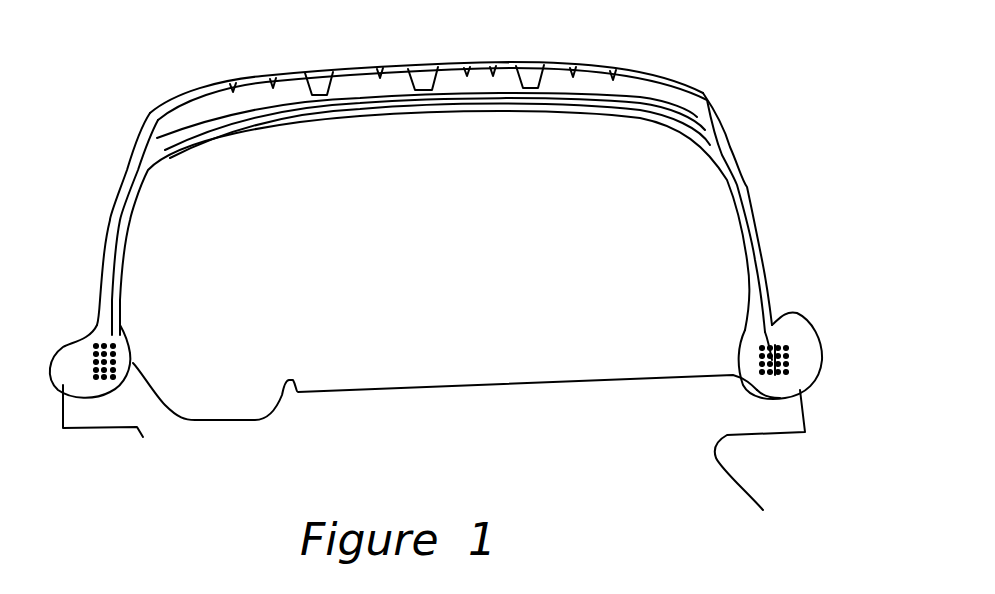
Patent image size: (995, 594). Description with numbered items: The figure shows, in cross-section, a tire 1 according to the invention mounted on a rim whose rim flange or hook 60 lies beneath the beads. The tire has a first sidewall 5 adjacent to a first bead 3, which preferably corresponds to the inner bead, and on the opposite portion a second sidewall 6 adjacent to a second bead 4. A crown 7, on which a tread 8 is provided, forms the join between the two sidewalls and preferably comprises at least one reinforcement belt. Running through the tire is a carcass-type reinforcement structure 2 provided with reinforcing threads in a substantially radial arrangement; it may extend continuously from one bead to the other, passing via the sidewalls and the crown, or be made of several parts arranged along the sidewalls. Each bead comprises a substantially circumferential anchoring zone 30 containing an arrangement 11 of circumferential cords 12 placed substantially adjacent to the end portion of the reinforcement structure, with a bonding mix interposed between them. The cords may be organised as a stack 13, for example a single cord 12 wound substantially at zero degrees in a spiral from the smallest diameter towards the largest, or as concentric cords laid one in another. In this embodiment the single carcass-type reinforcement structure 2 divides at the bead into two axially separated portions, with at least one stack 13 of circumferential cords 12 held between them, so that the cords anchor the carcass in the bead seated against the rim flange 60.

The tire 1 is at (170, 95).
The carcass-type reinforcement structure 2 is at (762, 259).
The first bead 3 is at (125, 332).
The second bead 4 is at (745, 330).
The first sidewall 5 is at (123, 240).
The second sidewall 6 is at (744, 207).
The crown 7 is at (433, 117).
The tread 8 is at (530, 67).
The arrangement of circumferential cords 11 is at (795, 357).
The circumferential cords 12 is at (777, 330).
The stack 13 is at (767, 390).
The anchoring zone 30 is at (133, 350).
The rim flange or hook 60 is at (527, 424).